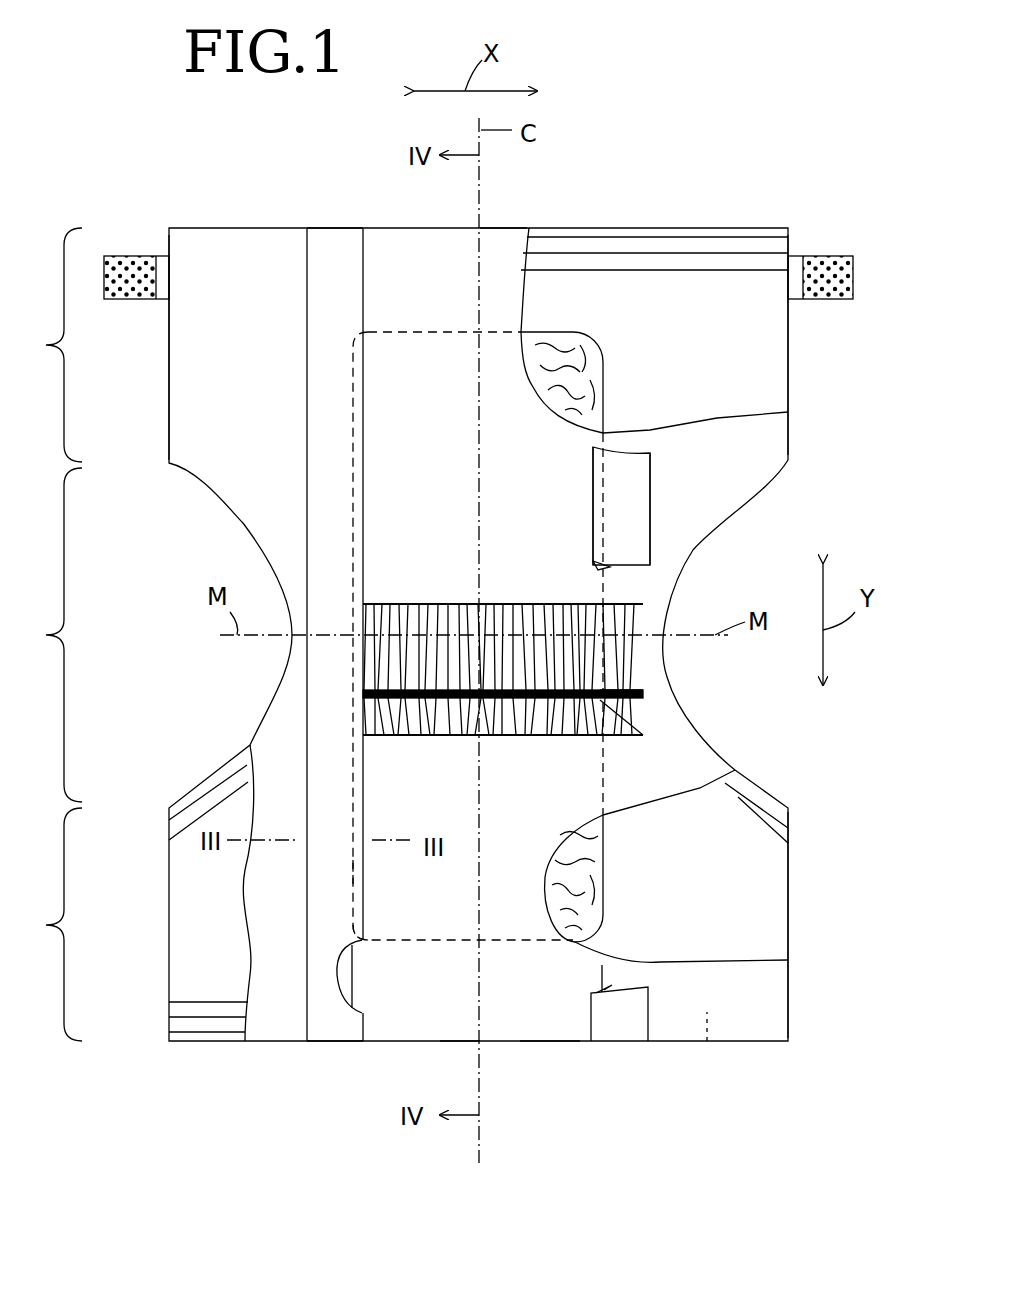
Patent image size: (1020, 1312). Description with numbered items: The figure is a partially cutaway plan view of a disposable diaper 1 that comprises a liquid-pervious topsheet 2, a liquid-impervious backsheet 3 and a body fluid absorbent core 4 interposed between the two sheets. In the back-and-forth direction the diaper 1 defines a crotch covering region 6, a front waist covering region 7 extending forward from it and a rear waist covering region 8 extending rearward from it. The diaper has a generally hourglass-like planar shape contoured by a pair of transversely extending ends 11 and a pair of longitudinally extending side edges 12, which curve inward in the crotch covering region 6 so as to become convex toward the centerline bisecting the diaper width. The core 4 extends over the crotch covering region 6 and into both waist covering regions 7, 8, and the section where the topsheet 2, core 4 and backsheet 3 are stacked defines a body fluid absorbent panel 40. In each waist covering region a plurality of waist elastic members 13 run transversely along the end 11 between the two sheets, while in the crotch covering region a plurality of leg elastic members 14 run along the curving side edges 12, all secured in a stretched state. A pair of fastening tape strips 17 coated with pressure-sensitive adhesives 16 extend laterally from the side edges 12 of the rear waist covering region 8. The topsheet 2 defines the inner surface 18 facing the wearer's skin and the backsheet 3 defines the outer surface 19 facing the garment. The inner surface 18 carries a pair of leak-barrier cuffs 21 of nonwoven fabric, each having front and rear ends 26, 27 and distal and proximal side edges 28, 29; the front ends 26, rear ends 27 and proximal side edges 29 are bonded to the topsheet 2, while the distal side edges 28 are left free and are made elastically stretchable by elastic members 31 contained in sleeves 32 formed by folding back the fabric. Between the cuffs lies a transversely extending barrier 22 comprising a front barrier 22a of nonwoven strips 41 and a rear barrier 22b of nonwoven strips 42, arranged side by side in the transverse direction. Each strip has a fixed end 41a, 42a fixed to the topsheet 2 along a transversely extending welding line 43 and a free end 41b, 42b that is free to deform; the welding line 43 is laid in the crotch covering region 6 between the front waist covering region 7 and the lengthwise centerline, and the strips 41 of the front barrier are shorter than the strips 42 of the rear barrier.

The disposable diaper 1 is at (742, 160).
The liquid-pervious topsheet 2 is at (765, 998).
The liquid-impervious backsheet 3 is at (770, 880).
The body fluid absorbent core 4 is at (595, 864).
The crotch covering region 6 is at (50, 635).
The front waist covering region 7 is at (50, 924).
The rear waist covering region 8 is at (50, 345).
The ends 11 is at (507, 228).
The side edges 12 is at (168, 420).
The waist elastic members 13 is at (628, 270).
The leg elastic members 14 is at (230, 790).
The pressure-sensitive adhesives 16 is at (832, 285).
The fastening tape strips 17 is at (163, 256).
The inner surface 18 is at (545, 1041).
The outer surface 19 is at (707, 1041).
The leak-barrier cuffs 21 is at (593, 462).
The barrier 22 is at (402, 585).
The front barrier 22a is at (398, 742).
The rear barrier 22b is at (437, 600).
The front ends 26 is at (333, 1040).
The rear ends 27 is at (333, 240).
The distal side edges 28 is at (363, 292).
The proximal side edges 29 is at (307, 323).
The elastic members 31 is at (598, 572).
The sleeves 32 is at (353, 874).
The body fluid absorbent panel 40 is at (449, 352).
The strips 41 is at (490, 743).
The fixed end 41a is at (628, 710).
The free end 41b is at (603, 737).
The strips 42 is at (547, 607).
The fixed end 42a is at (635, 683).
The free end 42b is at (645, 607).
The welding line 43 is at (568, 730).